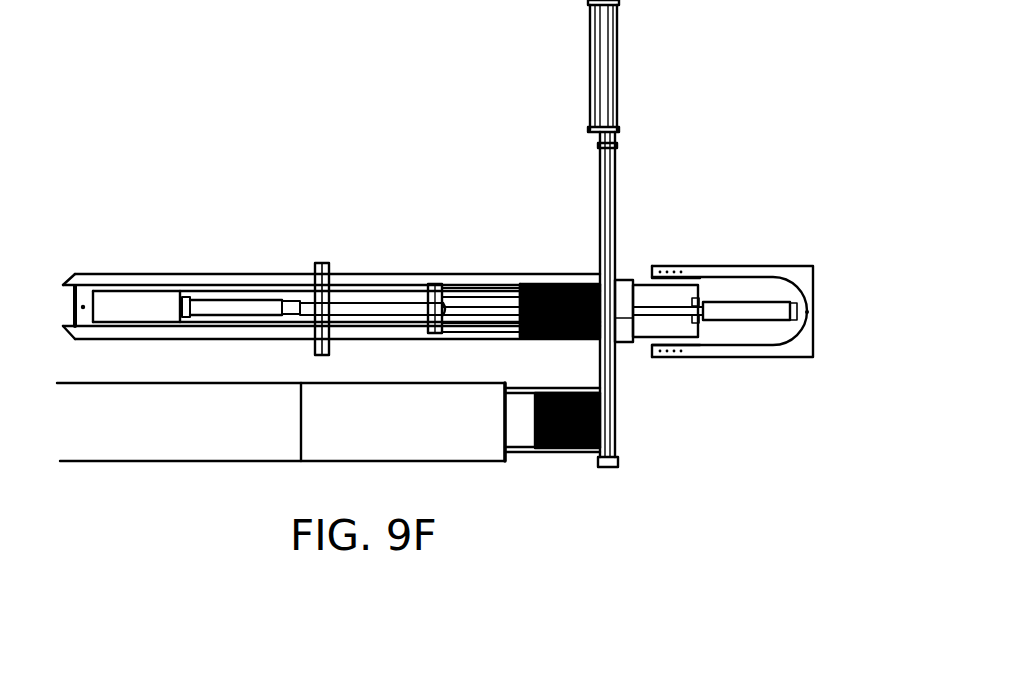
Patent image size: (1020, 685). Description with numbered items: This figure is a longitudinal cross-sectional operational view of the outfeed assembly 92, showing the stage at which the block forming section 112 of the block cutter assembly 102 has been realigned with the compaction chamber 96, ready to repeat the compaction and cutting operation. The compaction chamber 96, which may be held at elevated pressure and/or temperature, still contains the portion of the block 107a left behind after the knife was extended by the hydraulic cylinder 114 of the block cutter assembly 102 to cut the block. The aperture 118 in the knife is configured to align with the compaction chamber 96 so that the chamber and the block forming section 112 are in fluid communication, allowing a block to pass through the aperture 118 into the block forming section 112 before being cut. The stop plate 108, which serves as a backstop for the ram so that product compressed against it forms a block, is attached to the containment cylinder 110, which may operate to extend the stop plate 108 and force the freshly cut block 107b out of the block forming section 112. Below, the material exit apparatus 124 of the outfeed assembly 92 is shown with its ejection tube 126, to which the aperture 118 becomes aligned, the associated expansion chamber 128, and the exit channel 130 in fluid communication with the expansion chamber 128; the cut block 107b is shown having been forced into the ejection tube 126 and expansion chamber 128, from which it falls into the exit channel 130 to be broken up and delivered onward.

The outfeed assembly 92 is at (252, 138).
The compaction chamber 96 is at (535, 273).
The block cutter assembly 102 is at (683, 140).
The portion of the block within the chamber 107a is at (563, 273).
The freshly cut block portion 107b is at (557, 450).
The stop plate 108 is at (618, 322).
The containment cylinder 110 is at (757, 312).
The block forming section 112 is at (625, 277).
The hydraulic cylinder 114 is at (617, 70).
The aperture 118 is at (617, 288).
The material exit apparatus 124 is at (227, 517).
The ejection tube 126 is at (517, 448).
The expansion chamber 128 is at (455, 460).
The exit channel 130 is at (150, 463).